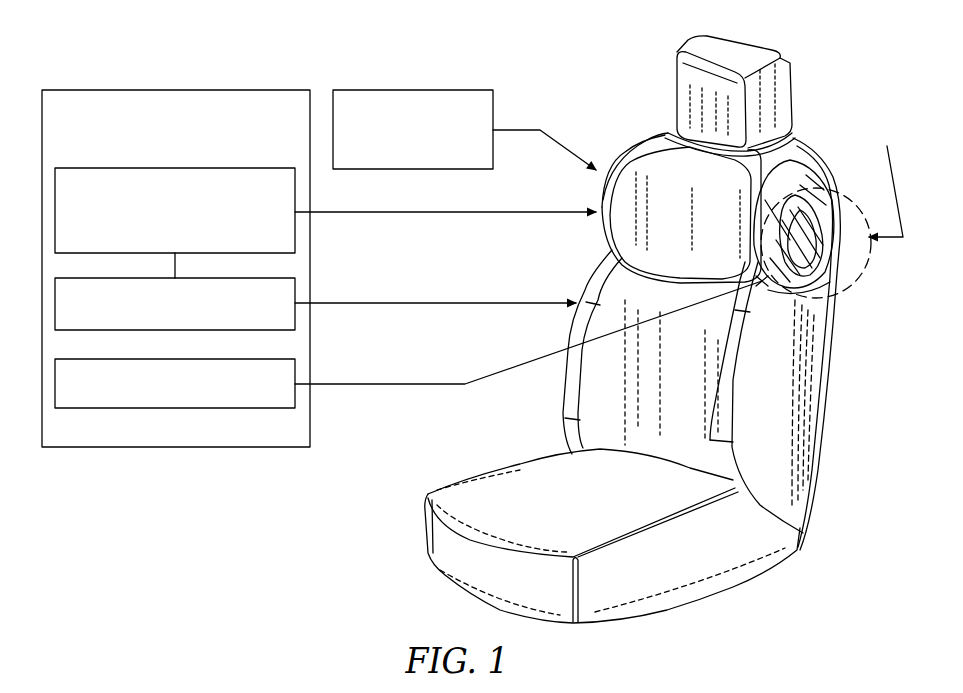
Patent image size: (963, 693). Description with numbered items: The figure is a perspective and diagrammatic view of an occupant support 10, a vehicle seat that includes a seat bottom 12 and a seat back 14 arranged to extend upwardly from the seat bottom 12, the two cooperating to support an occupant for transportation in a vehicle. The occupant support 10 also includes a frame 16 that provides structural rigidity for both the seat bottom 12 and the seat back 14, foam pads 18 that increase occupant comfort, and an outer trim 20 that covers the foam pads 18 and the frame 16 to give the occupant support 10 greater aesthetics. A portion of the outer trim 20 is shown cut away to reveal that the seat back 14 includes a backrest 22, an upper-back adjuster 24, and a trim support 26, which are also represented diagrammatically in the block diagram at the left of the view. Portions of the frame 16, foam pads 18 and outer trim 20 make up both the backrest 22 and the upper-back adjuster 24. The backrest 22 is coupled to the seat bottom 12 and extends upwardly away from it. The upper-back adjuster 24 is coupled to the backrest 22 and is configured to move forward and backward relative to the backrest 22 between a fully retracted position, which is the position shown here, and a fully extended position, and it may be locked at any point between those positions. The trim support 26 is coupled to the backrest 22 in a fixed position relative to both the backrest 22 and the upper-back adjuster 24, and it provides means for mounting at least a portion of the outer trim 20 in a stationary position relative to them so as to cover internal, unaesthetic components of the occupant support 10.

The occupant support 10 is at (640, 49).
The seat bottom 12 is at (447, 462).
The seat back 14 is at (174, 90).
The frame 16 is at (817, 189).
The foam pads 18 is at (770, 395).
The outer trim 20 is at (503, 517).
The backrest 22 is at (310, 318).
The upper-back adjuster 24 is at (310, 230).
The trim support 26 is at (310, 396).